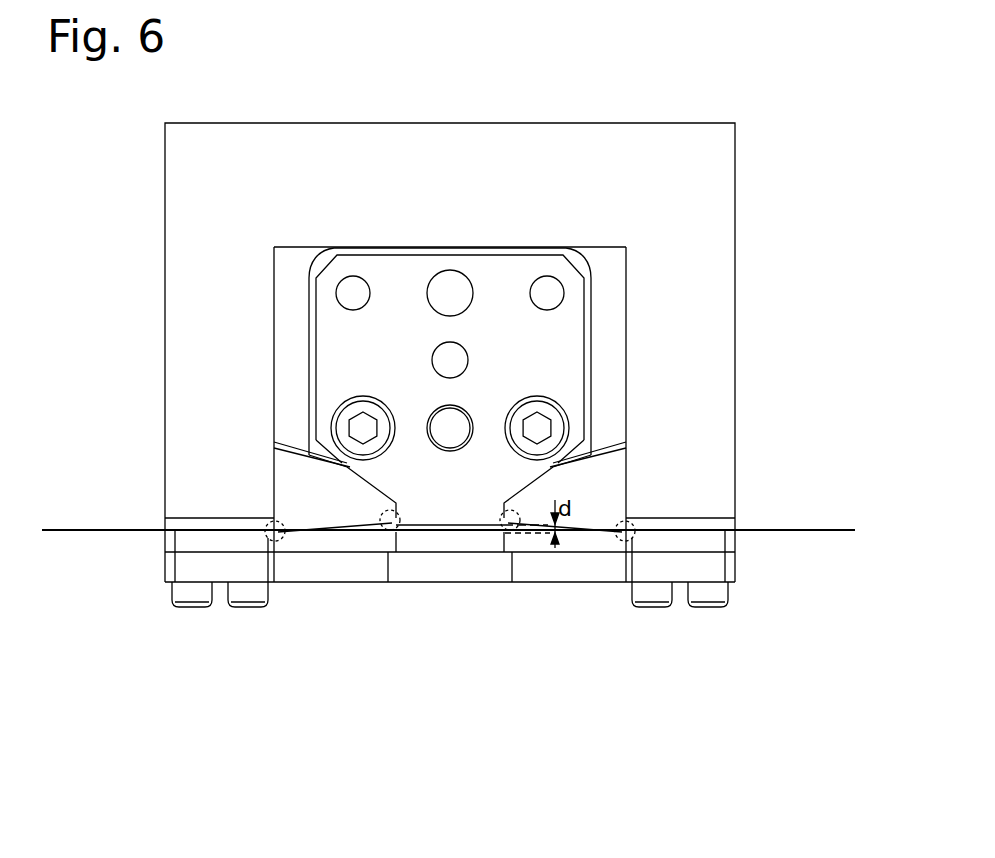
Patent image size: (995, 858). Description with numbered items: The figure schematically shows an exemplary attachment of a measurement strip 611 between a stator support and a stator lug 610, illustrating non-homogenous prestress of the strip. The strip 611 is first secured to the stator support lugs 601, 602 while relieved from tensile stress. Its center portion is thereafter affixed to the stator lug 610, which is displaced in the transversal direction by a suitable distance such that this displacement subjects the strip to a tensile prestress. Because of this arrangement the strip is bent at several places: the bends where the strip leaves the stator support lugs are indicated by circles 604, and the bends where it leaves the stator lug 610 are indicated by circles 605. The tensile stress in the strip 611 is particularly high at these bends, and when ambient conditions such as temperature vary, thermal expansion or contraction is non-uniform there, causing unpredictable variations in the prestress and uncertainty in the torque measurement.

The stator support lug 601 is at (197, 405).
The stator support lug 602 is at (697, 427).
The circles indicating bends at stator support lugs 604 is at (625, 535).
The circles indicating bends at stator lug 605 is at (390, 530).
The stator lug 610 is at (538, 357).
The strip 611 is at (337, 528).